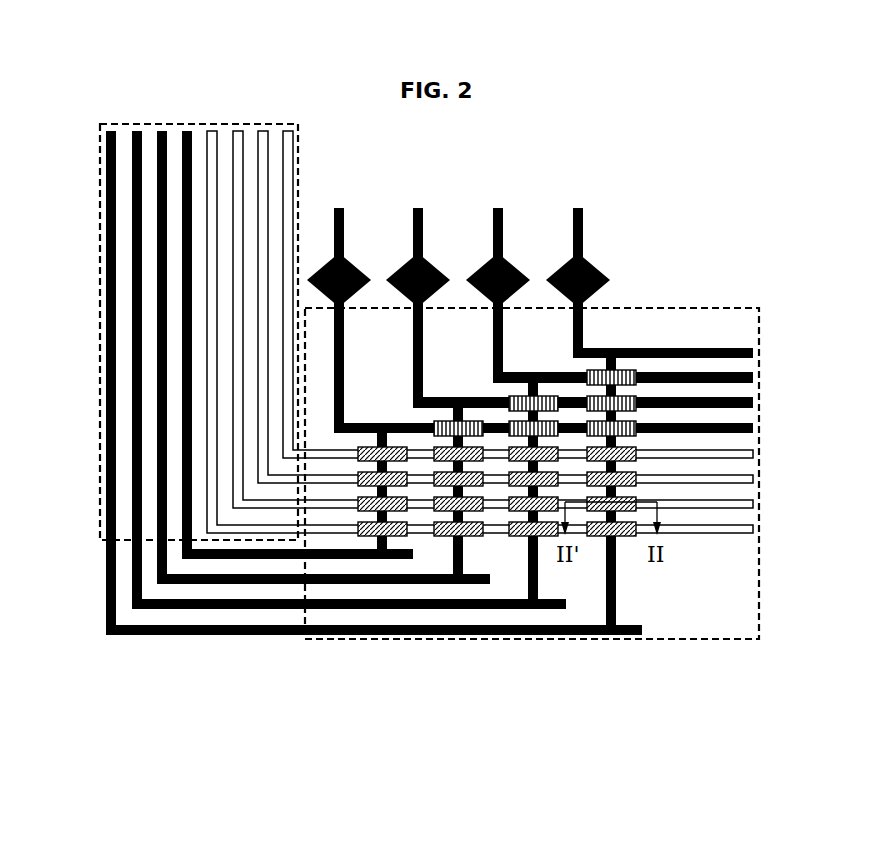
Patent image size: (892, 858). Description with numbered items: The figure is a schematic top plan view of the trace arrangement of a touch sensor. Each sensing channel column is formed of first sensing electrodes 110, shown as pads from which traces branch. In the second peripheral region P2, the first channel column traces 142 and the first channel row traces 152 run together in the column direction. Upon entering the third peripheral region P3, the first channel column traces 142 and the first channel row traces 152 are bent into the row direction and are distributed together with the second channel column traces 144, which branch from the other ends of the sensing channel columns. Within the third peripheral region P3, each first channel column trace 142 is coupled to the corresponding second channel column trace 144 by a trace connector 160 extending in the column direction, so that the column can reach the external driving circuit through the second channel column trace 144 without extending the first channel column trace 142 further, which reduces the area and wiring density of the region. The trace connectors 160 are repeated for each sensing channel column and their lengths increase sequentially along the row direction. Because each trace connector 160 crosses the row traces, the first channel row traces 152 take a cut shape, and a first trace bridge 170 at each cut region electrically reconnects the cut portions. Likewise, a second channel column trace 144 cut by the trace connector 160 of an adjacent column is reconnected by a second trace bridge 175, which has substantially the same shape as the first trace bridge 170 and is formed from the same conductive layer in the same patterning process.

The first sensing electrode 110 is at (428, 270).
The first channel column trace 142 is at (213, 636).
The second channel column trace 144 is at (706, 348).
The first channel row trace 152 is at (722, 534).
The trace connector 160 is at (606, 577).
The first trace bridge 170 is at (622, 536).
The second trace bridge 175 is at (621, 370).
The second peripheral region P2 is at (308, 138).
The third peripheral region P3 is at (393, 652).